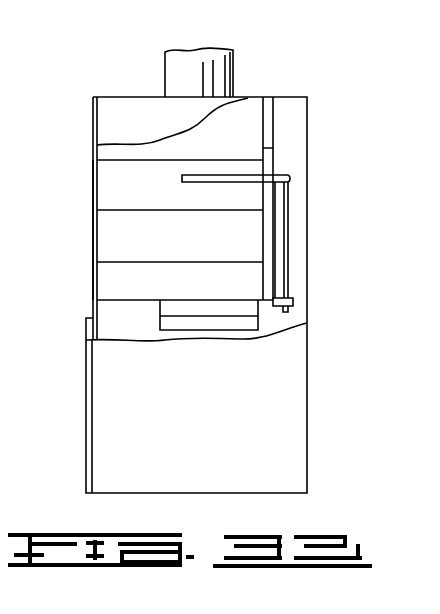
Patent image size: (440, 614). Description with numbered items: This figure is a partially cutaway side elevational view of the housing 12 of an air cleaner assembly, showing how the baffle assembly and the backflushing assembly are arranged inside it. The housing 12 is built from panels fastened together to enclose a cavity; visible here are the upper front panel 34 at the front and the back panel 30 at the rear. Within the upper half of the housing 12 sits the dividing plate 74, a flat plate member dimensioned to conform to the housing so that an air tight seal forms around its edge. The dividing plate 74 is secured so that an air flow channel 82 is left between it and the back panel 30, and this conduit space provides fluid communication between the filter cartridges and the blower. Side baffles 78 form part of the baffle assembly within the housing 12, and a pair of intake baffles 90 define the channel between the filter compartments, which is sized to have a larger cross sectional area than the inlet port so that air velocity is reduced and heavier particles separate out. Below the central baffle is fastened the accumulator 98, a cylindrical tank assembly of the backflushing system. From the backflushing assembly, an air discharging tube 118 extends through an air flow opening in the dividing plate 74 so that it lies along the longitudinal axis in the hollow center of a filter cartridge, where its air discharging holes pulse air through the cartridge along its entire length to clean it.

The housing 12 is at (116, 97).
The back panel 30 is at (308, 255).
The upper front panel 34 is at (92, 241).
The dividing plate 74 is at (271, 128).
The side baffles 78 is at (138, 220).
The air flow channel 82 is at (296, 203).
The intake baffles 90 is at (230, 135).
The accumulator 98 is at (167, 331).
The air discharging tubes 118 is at (190, 183).